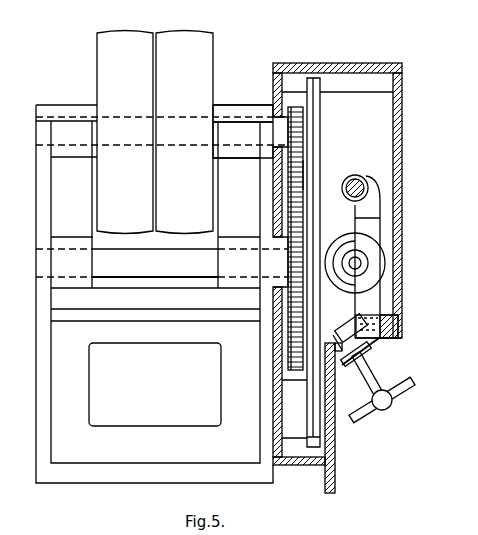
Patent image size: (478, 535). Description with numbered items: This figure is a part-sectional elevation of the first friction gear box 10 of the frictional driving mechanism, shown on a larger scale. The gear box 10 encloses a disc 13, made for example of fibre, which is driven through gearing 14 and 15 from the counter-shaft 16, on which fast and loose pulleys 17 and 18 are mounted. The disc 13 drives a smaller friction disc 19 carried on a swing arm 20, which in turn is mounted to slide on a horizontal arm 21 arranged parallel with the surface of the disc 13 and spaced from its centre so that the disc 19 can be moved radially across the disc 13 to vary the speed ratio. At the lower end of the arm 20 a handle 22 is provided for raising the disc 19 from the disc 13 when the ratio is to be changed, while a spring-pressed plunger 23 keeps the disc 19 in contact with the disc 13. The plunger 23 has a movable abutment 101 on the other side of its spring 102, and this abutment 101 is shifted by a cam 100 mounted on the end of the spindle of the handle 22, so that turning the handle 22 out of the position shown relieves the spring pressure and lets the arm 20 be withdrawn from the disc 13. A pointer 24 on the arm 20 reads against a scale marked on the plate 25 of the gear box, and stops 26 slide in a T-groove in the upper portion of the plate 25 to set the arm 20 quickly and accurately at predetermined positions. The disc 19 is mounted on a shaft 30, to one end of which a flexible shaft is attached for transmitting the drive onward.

The friction gear box 10 is at (398, 125).
The disc 13 is at (316, 105).
The gearing 14 is at (297, 108).
The gearing 15 is at (323, 173).
The counter-shaft 16 is at (243, 133).
The fast pulley 17 is at (125, 132).
The loose pulley 18 is at (184, 132).
The smaller friction disc 19 is at (385, 247).
The swing arm 20 is at (370, 225).
The horizontal arm 21 is at (368, 185).
The handle 22 is at (408, 388).
The spring-pressed plunger 23 is at (392, 325).
The pointer 24 is at (340, 377).
The plate 25 is at (333, 440).
The stops 26 is at (392, 404).
The shaft 30 is at (358, 264).
The cam 100 is at (337, 327).
The movable abutment 101 is at (383, 310).
The spring 102 is at (390, 333).